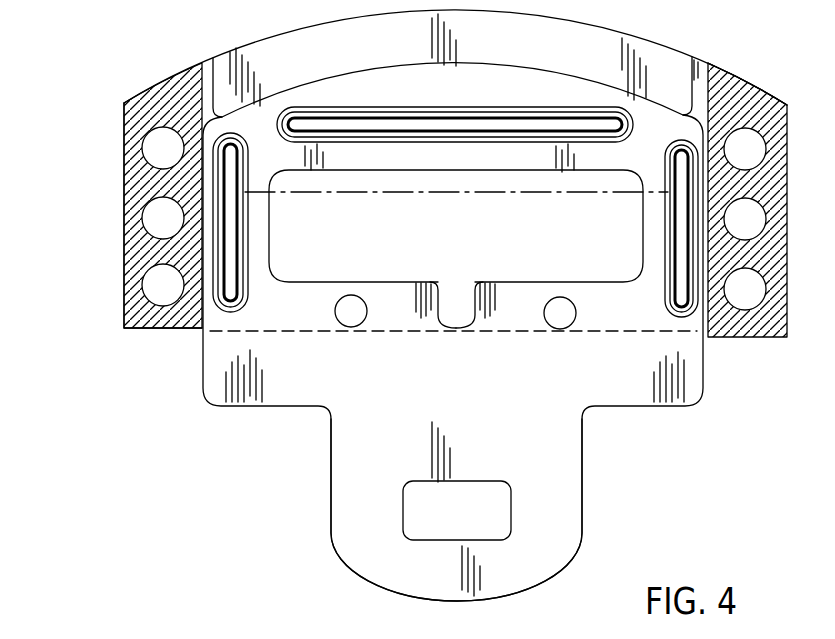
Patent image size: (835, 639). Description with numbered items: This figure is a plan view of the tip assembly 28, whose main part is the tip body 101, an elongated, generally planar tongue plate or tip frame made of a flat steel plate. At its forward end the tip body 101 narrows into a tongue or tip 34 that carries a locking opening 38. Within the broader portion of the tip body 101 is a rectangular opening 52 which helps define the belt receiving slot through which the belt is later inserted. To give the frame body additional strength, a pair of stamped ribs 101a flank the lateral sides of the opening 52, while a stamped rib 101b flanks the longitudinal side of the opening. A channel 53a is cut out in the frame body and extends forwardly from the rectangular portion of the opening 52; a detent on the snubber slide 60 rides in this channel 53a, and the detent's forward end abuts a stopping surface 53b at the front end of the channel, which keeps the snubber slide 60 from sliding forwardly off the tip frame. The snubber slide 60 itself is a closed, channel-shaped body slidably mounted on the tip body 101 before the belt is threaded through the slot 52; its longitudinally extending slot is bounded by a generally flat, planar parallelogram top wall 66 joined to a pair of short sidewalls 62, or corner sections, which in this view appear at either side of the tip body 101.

The tip assembly 28 is at (200, 482).
The tongue or tip 34 is at (310, 460).
The locking opening 38 is at (492, 518).
The rectangular opening 52 is at (561, 228).
The channel 53a is at (462, 300).
The stopping surface 53b is at (450, 318).
The snubber slide 60 is at (100, 318).
The sidewalls 62 is at (124, 130).
The top wall 66 is at (749, 115).
The tip body 101 is at (598, 452).
The stamped ribs 101a is at (236, 158).
The stamped rib 101b is at (468, 122).